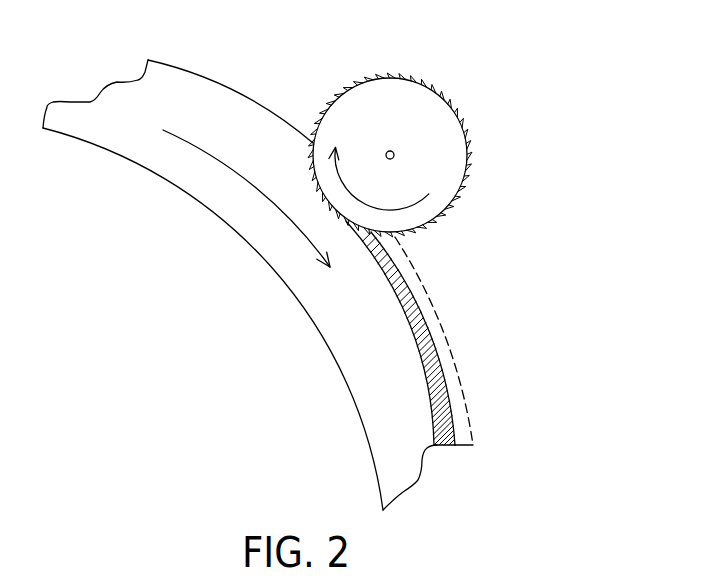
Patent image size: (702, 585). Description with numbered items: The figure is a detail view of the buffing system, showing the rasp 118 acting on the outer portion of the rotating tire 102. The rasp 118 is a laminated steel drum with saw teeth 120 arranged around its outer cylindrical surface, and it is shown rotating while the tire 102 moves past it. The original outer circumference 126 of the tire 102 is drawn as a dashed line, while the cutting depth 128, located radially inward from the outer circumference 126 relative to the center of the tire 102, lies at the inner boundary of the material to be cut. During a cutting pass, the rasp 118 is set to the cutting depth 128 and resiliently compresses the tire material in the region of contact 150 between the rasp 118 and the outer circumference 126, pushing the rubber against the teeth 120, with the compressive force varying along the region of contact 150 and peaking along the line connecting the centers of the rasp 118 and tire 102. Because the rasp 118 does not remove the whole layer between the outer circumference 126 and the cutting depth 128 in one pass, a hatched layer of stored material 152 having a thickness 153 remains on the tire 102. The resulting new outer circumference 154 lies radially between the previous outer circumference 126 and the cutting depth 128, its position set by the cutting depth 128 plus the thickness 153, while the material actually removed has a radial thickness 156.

The tire 102 is at (232, 127).
The rasp 118 is at (440, 157).
The saw teeth 120 is at (434, 76).
The outer circumference 126 is at (424, 274).
The cutting depth 128 is at (449, 394).
The region of contact 150 is at (306, 196).
The layer of stored material 152 is at (398, 306).
The thickness 153 is at (447, 455).
The new outer circumference 154 is at (431, 318).
The thickness 156 is at (470, 452).